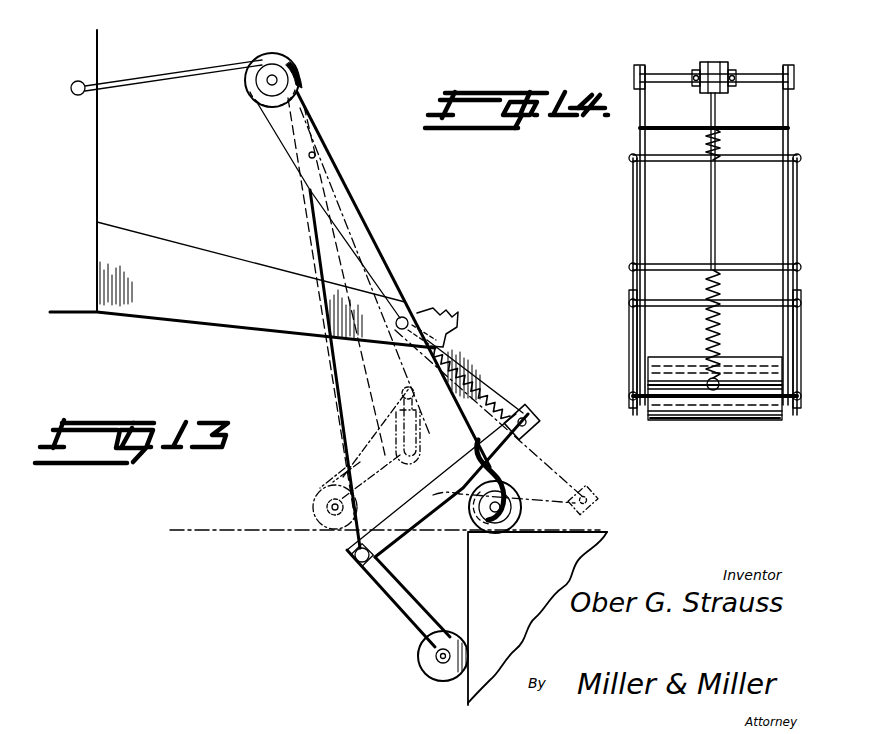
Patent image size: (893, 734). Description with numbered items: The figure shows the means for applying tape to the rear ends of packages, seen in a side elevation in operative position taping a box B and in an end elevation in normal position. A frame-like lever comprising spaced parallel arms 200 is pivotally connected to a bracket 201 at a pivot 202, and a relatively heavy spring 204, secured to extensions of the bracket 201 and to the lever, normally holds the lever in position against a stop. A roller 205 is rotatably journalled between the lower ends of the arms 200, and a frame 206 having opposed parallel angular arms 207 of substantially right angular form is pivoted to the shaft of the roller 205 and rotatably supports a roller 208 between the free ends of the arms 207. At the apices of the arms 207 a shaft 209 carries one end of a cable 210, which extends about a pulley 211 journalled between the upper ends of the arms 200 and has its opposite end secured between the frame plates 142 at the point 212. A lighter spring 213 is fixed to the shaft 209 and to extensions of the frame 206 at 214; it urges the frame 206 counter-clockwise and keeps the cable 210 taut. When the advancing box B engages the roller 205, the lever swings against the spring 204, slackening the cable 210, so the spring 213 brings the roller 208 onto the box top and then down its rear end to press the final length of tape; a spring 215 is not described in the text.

In FIG. 13, the spaced parallel plates 142 is at (88, 185).
In FIG. 13, the arms of lever 200 is at (363, 245).
In FIG. 14, the arms of lever 200 is at (643, 110).
In FIG. 13, the bracket 201 is at (197, 227).
In FIG. 14, the bracket 201 is at (636, 226).
In FIG. 13, the pivot connection 202 is at (405, 318).
In FIG. 14, the pivot connection 202 is at (687, 253).
In FIG. 14, the spring 204 is at (722, 150).
In FIG. 13, the roller 205 is at (522, 513).
In FIG. 14, the roller 205 is at (713, 420).
In FIG. 13, the frame 206 is at (353, 437).
In FIG. 13, the angular arms 207 is at (410, 500).
In FIG. 14, the angular arms 207 is at (635, 327).
In FIG. 13, the roller 208 is at (317, 504).
In FIG. 14, the roller 208 is at (683, 347).
In FIG. 13, the shaft 209 is at (358, 556).
In FIG. 14, the shaft 209 is at (750, 305).
In FIG. 13, the cable 210 is at (315, 220).
In FIG. 14, the cable 210 is at (717, 212).
In FIG. 13, the pulley 211 is at (298, 73).
In FIG. 14, the pulley 211 is at (728, 63).
In FIG. 13, the cable end securement 212 is at (77, 82).
In FIG. 13, the spring 213 is at (480, 385).
In FIG. 13, the spring attachment 214 is at (533, 422).
In FIG. 14, the spring attachment 214 is at (763, 397).
In FIG. 14, the spring 215 is at (718, 335).
In FIG. 13, the boxes B is at (482, 562).